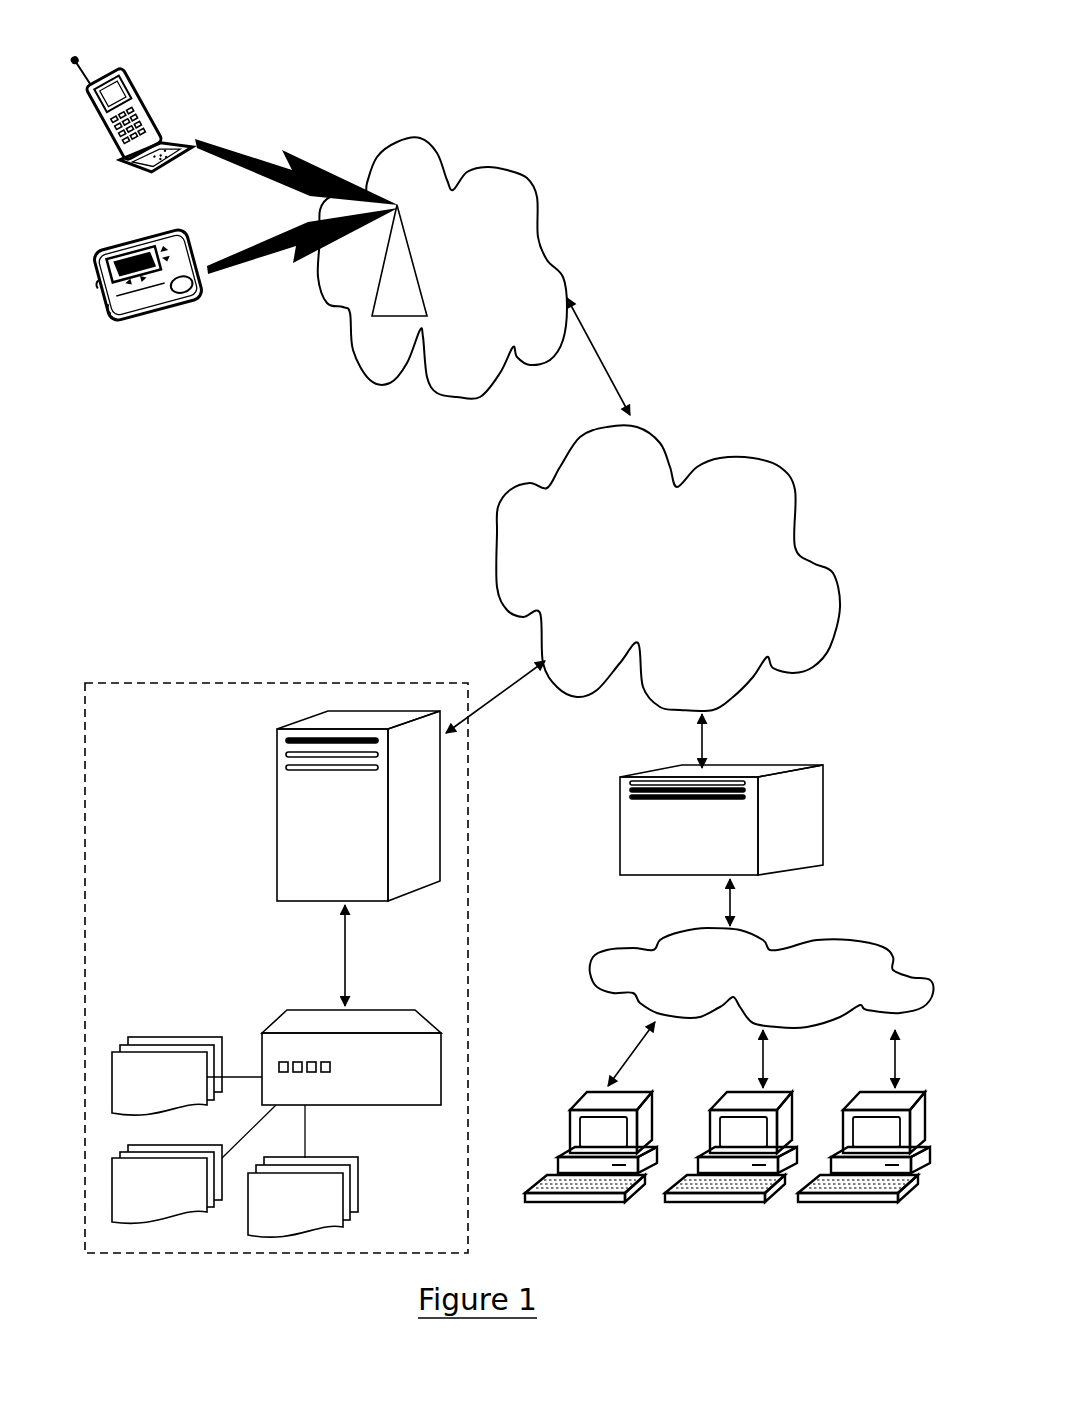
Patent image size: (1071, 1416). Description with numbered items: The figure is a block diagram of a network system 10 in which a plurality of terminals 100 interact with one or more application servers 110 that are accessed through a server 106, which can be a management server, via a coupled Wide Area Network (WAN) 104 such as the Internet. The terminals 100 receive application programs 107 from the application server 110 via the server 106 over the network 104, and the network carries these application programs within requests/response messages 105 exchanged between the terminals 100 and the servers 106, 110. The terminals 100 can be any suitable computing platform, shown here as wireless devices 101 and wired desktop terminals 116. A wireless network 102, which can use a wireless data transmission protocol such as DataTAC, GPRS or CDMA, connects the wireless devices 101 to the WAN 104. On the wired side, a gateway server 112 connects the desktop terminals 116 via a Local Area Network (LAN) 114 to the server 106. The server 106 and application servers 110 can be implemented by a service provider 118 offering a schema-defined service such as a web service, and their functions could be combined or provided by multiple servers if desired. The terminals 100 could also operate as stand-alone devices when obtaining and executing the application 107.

The network system 10 is at (702, 38).
The terminals 100 is at (256, 64).
The wireless devices 101 is at (139, 83).
The wireless network 102 is at (528, 178).
The Wide Area Network (WAN) 104 is at (746, 466).
The requests/response messages 105 is at (508, 686).
The server 106 is at (276, 806).
The application programs 107 is at (195, 1037).
The application servers 110 is at (305, 1008).
The gateway server 112 is at (618, 824).
The Local Area Network (LAN) 114 is at (620, 950).
The desktop terminals 116 is at (590, 1090).
The service provider 118 is at (333, 680).